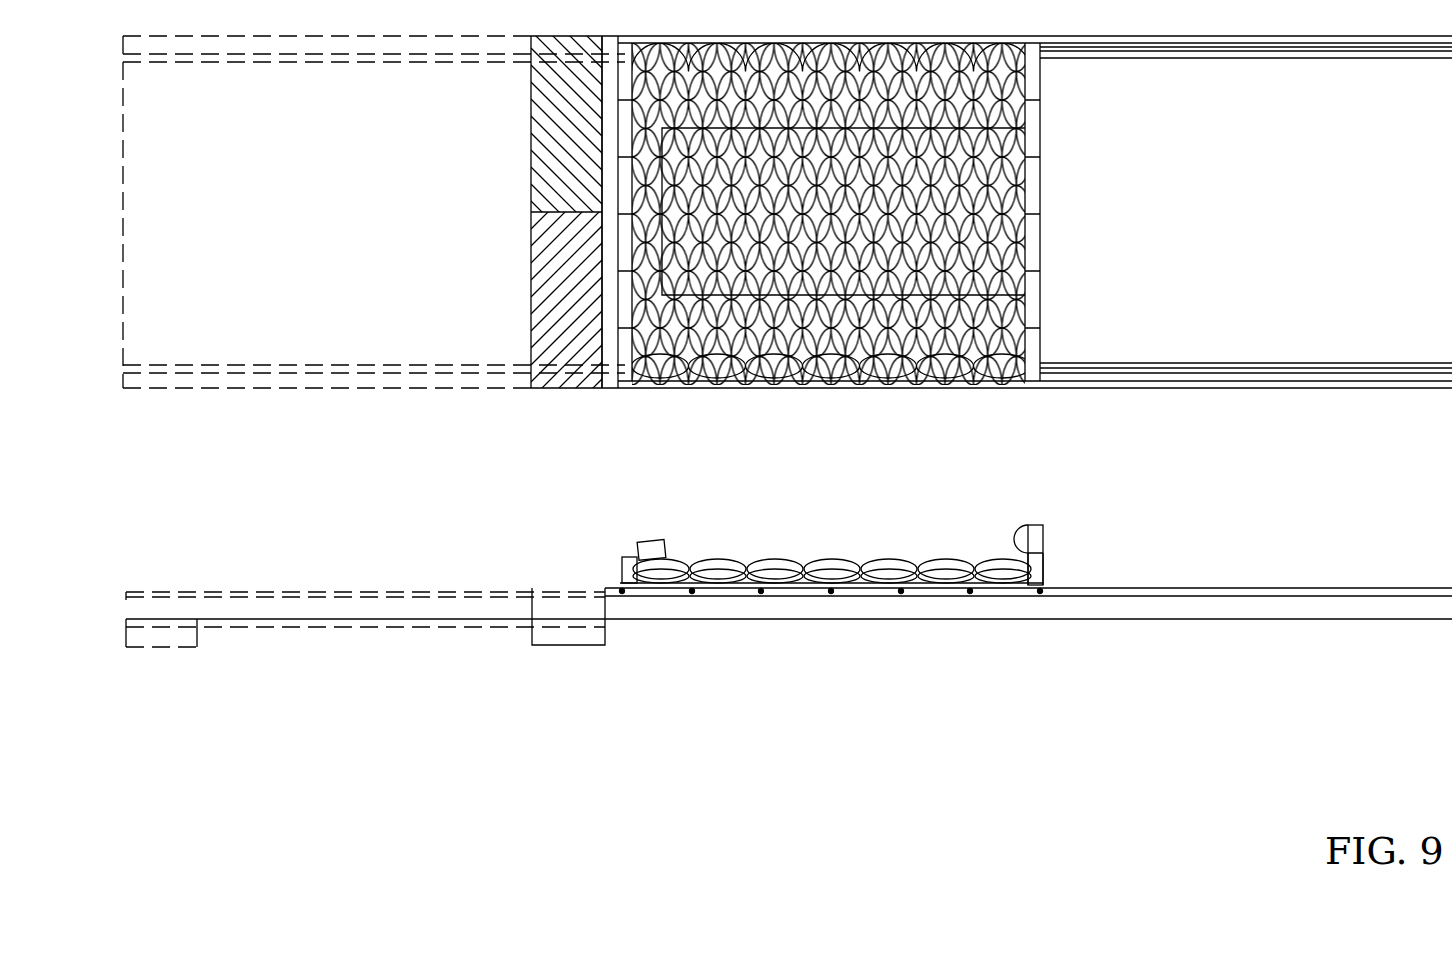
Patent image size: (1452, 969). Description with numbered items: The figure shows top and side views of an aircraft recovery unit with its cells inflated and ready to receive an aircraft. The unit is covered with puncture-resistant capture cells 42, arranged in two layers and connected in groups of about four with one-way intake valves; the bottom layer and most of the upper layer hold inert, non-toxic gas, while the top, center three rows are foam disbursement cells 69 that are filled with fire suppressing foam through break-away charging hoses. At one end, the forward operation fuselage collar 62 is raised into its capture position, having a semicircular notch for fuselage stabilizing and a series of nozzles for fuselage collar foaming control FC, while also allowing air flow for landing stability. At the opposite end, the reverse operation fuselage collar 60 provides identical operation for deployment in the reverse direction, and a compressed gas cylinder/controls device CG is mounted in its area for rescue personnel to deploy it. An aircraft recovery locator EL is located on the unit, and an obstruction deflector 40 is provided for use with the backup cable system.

The obstruction deflector 40 is at (787, 236).
The capture cells 42 is at (717, 366).
The foam disbursement cells 69 is at (925, 350).
The compressed gas cylinder/controls device CG is at (628, 355).
The reverse operation fuselage collar 60 is at (620, 572).
The forward operation fuselage collar 62 is at (1037, 540).
The fuselage collar foaming control nozzles FC is at (1032, 578).
The aircraft recovery locator EL is at (1038, 562).